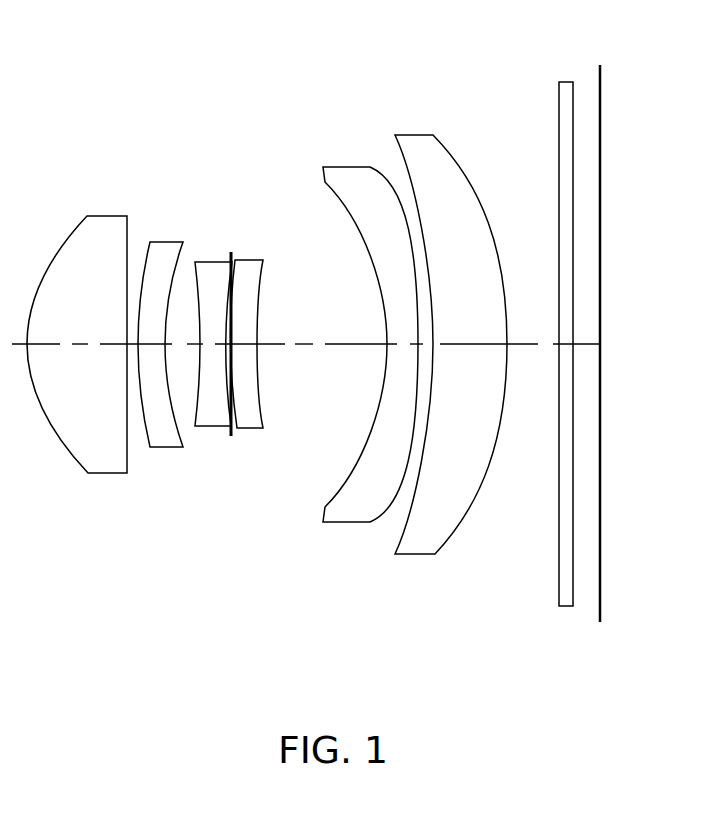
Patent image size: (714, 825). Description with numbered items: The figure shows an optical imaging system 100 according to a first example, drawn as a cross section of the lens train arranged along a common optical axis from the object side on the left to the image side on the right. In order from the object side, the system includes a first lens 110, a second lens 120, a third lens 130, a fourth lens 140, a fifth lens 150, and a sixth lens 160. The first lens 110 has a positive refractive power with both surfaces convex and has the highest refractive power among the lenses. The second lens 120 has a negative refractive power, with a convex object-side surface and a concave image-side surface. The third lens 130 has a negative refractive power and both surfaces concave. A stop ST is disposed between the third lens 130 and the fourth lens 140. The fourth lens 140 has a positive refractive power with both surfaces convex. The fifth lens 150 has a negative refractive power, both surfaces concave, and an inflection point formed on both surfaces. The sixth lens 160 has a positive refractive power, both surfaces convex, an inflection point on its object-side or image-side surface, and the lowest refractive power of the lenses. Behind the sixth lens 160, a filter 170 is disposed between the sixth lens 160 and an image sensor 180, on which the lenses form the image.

The optical imaging system 100 is at (266, 134).
The first lens 110 is at (93, 466).
The second lens 120 is at (165, 437).
The third lens 130 is at (212, 421).
The stop ST is at (231, 252).
The fourth lens 140 is at (253, 426).
The fifth lens 150 is at (343, 515).
The sixth lens 160 is at (414, 548).
The filter 170 is at (561, 606).
The image sensor 180 is at (600, 622).